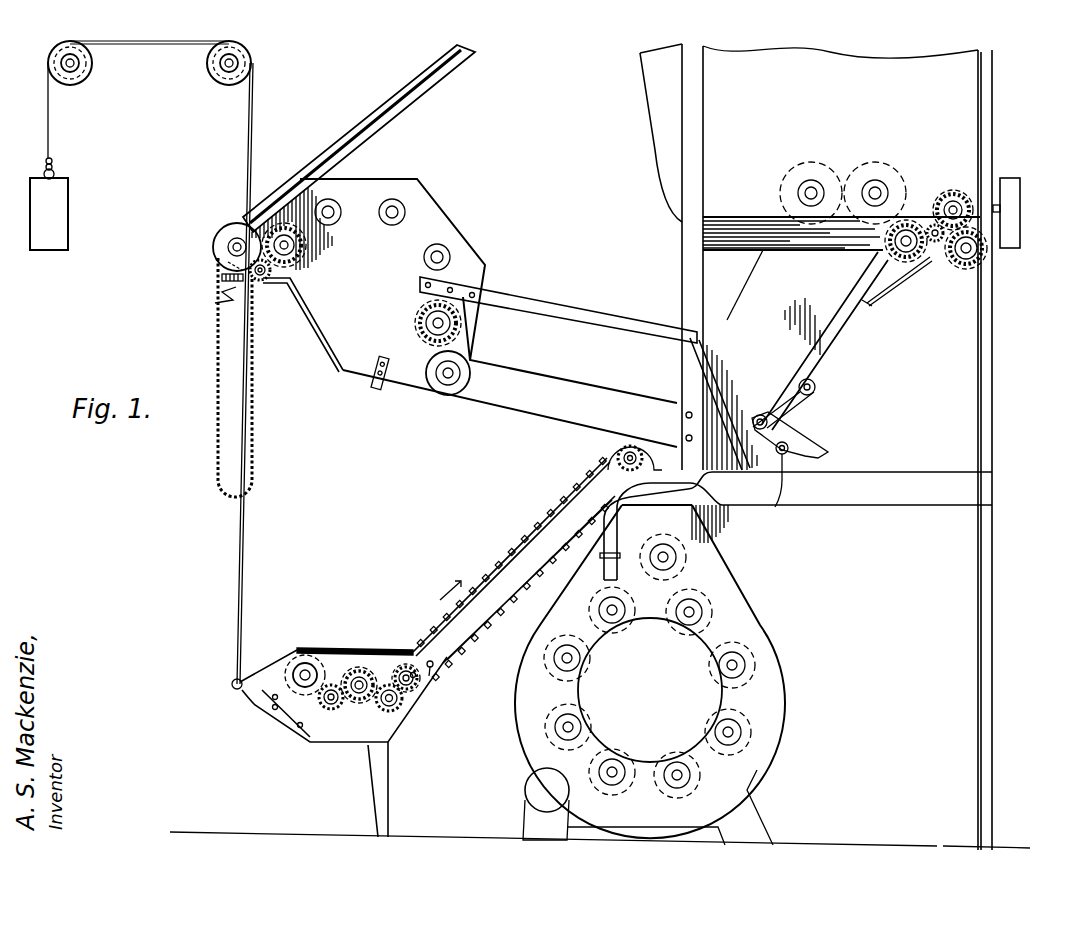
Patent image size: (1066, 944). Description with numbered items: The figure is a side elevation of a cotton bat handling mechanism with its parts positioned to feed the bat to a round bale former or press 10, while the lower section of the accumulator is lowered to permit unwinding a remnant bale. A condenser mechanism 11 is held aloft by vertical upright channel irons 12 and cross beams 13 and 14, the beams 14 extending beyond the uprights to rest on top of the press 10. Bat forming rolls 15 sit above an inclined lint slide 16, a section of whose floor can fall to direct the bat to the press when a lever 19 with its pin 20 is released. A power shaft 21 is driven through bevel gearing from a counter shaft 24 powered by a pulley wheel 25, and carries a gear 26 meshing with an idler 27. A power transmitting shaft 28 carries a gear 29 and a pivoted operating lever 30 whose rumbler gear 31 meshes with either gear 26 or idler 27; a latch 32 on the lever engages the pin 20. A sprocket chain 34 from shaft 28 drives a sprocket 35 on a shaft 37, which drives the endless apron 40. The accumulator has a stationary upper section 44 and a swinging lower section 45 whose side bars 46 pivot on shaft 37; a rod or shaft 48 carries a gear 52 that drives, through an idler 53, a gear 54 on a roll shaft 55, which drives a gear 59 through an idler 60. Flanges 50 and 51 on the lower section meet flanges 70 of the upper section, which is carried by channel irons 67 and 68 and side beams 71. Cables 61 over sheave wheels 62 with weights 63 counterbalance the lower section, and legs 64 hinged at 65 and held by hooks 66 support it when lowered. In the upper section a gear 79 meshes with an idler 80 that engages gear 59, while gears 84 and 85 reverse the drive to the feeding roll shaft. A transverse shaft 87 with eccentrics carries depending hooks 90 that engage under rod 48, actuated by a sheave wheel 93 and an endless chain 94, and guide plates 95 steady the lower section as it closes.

The round bale former or press 10 is at (770, 685).
The condenser mechanism 11 is at (657, 142).
The vertical upright channel irons 12 is at (683, 287).
The cross beams (side beams) 13 is at (703, 233).
The cross beams (beam extensions) 14 is at (908, 495).
The condenser or bat forming rolls 15 is at (858, 160).
The lint slide or chute 16 is at (753, 293).
The lever 19 is at (797, 408).
The projection or pin 20 is at (775, 504).
The power shaft 21 is at (950, 195).
The counter shaft 24 is at (998, 210).
The pulley wheel 25 is at (1010, 183).
The gear 26 is at (949, 206).
The idler 27 is at (965, 265).
The power transmitting shaft 28 is at (908, 238).
The gear 29 is at (905, 262).
The operating lever 30 is at (817, 343).
The rumbler gear 31 is at (935, 245).
The hook or latch 32 is at (813, 448).
The sprocket chain 34 is at (867, 305).
The sprocket 35 is at (640, 450).
The shaft 37 is at (618, 456).
The endless apron 40 is at (515, 547).
The upper section of accumulator 44 is at (488, 217).
The lower section of accumulator 45 is at (358, 725).
The side bars 46 is at (490, 583).
The transverse rod / shaft 48 is at (413, 675).
The inwardly extending flanges 50 is at (518, 543).
The outwardly extending flanges 51 is at (342, 648).
The gear 52 is at (417, 687).
The idler 53 is at (402, 705).
The gear 54 is at (362, 668).
The roll shaft 55 is at (378, 665).
The gear 59 is at (310, 658).
The idler 60 is at (328, 710).
The cables 61 is at (250, 142).
The sheave wheels 62 is at (240, 63).
The weights 63 is at (49, 214).
The feet or legs 64 is at (383, 777).
The hinge connection 65 is at (395, 743).
The hooks 66 is at (433, 668).
The channel iron 67 is at (563, 303).
The channel iron 68 is at (424, 84).
The marginal flanges 70 is at (332, 340).
The side beams 71 is at (532, 400).
The gear 79 is at (300, 248).
The idler 80 is at (263, 283).
The gear 84 is at (453, 325).
The gear 85 is at (447, 395).
The transverse shaft 87 is at (229, 247).
The depending hook 90 is at (222, 293).
The sheave wheel 93 is at (227, 227).
The endless operating chain or cable 94 is at (257, 360).
The guide plates 95 is at (374, 393).